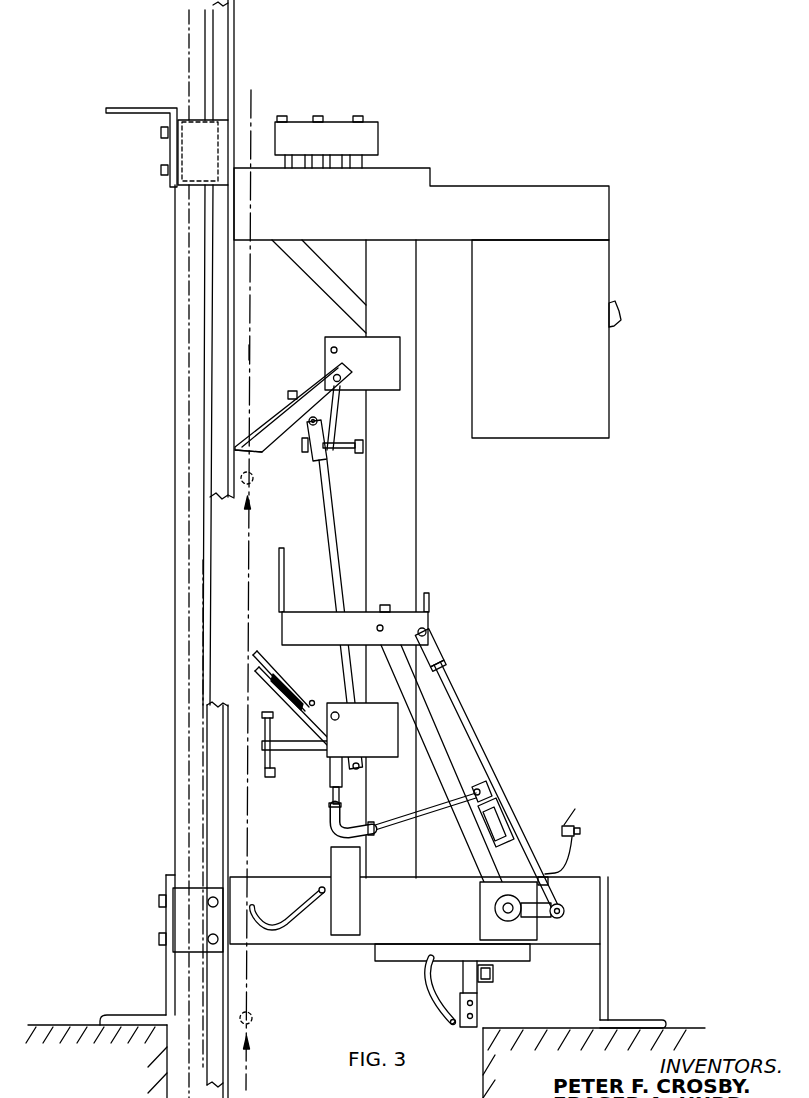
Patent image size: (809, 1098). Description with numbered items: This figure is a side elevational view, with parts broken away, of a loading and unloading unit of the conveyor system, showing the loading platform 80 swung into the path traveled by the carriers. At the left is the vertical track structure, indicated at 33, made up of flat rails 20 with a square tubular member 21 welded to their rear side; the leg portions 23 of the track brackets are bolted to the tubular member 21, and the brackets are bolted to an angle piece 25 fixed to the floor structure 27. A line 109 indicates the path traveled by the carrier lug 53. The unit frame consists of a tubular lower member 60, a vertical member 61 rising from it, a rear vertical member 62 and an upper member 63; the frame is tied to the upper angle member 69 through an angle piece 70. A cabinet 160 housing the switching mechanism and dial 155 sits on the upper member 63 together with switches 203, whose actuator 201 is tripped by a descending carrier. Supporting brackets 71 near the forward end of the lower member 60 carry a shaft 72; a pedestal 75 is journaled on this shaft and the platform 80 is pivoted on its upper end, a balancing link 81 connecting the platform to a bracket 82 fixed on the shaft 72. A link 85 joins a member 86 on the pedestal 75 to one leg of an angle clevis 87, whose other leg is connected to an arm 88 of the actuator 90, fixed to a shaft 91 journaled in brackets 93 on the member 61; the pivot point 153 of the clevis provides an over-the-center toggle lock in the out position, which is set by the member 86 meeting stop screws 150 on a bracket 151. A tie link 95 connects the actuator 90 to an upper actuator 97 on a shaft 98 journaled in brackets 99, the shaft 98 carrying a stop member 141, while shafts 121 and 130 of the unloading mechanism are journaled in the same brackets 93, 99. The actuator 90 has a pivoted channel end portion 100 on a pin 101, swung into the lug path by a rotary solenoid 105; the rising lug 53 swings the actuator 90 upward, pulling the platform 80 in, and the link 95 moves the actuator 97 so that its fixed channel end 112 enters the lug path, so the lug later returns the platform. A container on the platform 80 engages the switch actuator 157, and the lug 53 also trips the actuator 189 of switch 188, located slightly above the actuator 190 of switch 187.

The rails 20 is at (235, 75).
The square tubular members 21 is at (220, 49).
The leg portions 23 is at (217, 153).
The angle pieces 25 is at (165, 962).
The floor structure 27 is at (82, 1024).
The mast assembly 33 is at (184, 54).
The carrier lug 53 is at (254, 484).
The lower member 60 is at (413, 923).
The vertical member 61 is at (393, 321).
The rear vertical member 62 is at (176, 311).
The upper member 63 is at (395, 223).
The upper angle member 69 is at (122, 111).
The angle piece 70 is at (183, 165).
The supporting brackets 71 is at (493, 903).
The shaft 72 is at (504, 912).
The pedestal 75 is at (440, 762).
The loading platform 80 is at (431, 611).
The balancing link 81 is at (464, 716).
The bracket 82 is at (548, 913).
The link 85 is at (437, 805).
The member 86 is at (499, 809).
The angle clevis 87 is at (339, 831).
The arm 88 is at (330, 782).
The actuator 90 is at (291, 701).
The shaft 91 is at (327, 746).
The brackets 93 is at (390, 741).
The link 95 is at (328, 541).
The actuator 97 is at (312, 387).
The shaft 98 is at (339, 382).
The brackets 99 is at (377, 371).
The end portion 100 is at (272, 675).
The pin 101 is at (300, 718).
The rotary solenoid 105 is at (287, 687).
The line 109 is at (252, 352).
The fixed channel end portion 112 is at (258, 431).
The shaft 121 is at (341, 713).
The shaft 130 is at (331, 350).
The stop member 141 is at (332, 432).
The stop screws 150 is at (565, 826).
The bracket 151 is at (572, 857).
The pivot point 153 is at (343, 803).
The dial 155 is at (617, 320).
The actuator 157 is at (384, 605).
The cabinet 160 is at (557, 353).
The switch 187 is at (475, 1007).
The switch 188 is at (352, 898).
The actuator 189 is at (287, 926).
The actuator 190 is at (436, 991).
The actuator 201 is at (338, 160).
The switches 203 is at (348, 132).